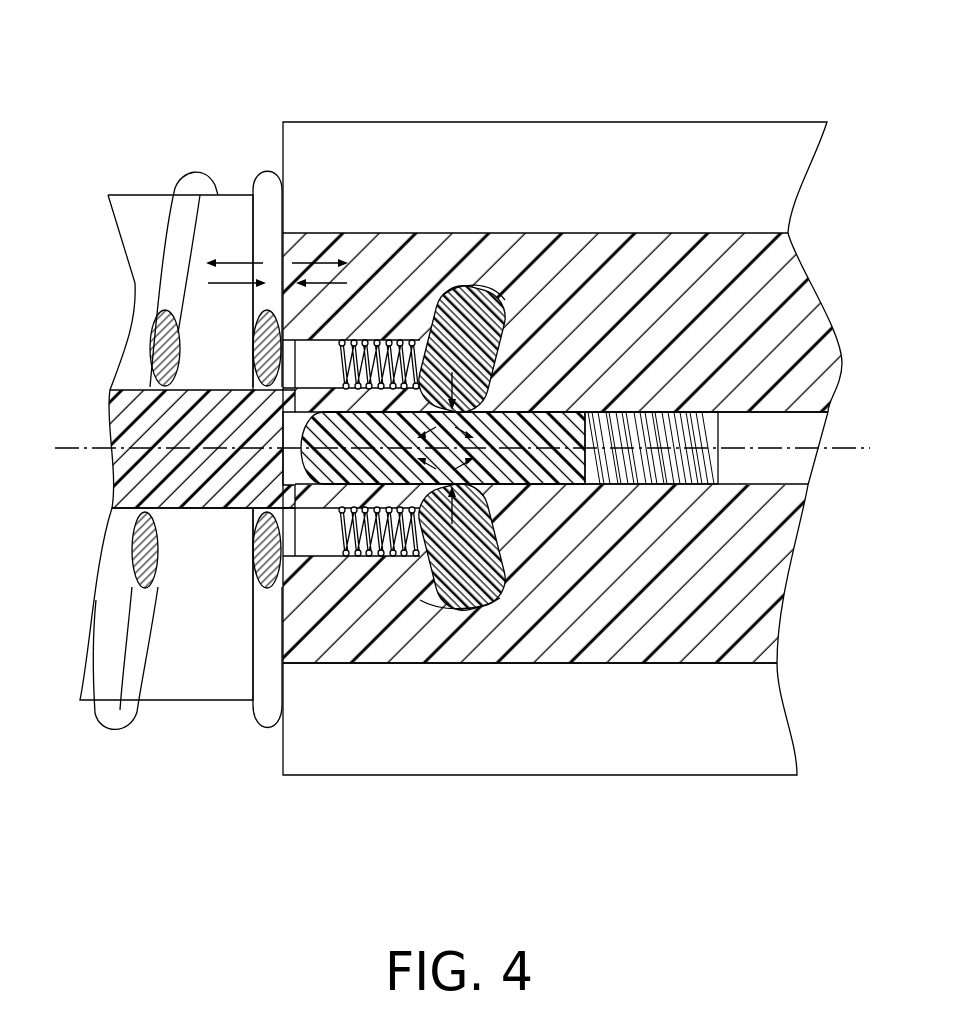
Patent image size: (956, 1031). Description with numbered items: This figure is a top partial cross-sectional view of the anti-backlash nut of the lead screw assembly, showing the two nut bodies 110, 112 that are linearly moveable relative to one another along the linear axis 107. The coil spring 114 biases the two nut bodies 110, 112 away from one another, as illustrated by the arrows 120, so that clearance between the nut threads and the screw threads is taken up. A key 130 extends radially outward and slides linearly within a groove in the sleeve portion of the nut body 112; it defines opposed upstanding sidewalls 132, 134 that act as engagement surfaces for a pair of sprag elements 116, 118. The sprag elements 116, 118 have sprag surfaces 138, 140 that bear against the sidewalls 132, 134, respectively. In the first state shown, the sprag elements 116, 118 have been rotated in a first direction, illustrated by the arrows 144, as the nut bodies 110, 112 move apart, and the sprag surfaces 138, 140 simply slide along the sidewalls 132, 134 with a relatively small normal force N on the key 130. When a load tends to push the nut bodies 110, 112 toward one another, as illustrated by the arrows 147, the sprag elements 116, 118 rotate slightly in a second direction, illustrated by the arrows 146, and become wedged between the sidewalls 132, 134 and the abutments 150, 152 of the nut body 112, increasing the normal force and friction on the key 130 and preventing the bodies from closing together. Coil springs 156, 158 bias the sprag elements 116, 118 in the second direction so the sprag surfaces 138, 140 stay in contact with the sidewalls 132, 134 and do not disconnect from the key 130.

The linear axis 107 is at (852, 446).
The nut body 110 is at (172, 138).
The nut body 112 is at (550, 836).
The coil spring 114 is at (172, 237).
The sprag element 116 is at (510, 595).
The sprag element 118 is at (490, 400).
The arrows 120 is at (232, 258).
The key 130 is at (590, 480).
The sidewall 132 is at (345, 500).
The sidewall 134 is at (345, 402).
The sprag surface 138 is at (570, 500).
The sprag surface 140 is at (512, 412).
The arrows 144 is at (442, 300).
The arrows 146 is at (460, 380).
The arrows 147 is at (350, 268).
The abutment 150 is at (480, 596).
The abutment 152 is at (482, 290).
The coil spring 156 is at (362, 557).
The coil spring 158 is at (380, 338).